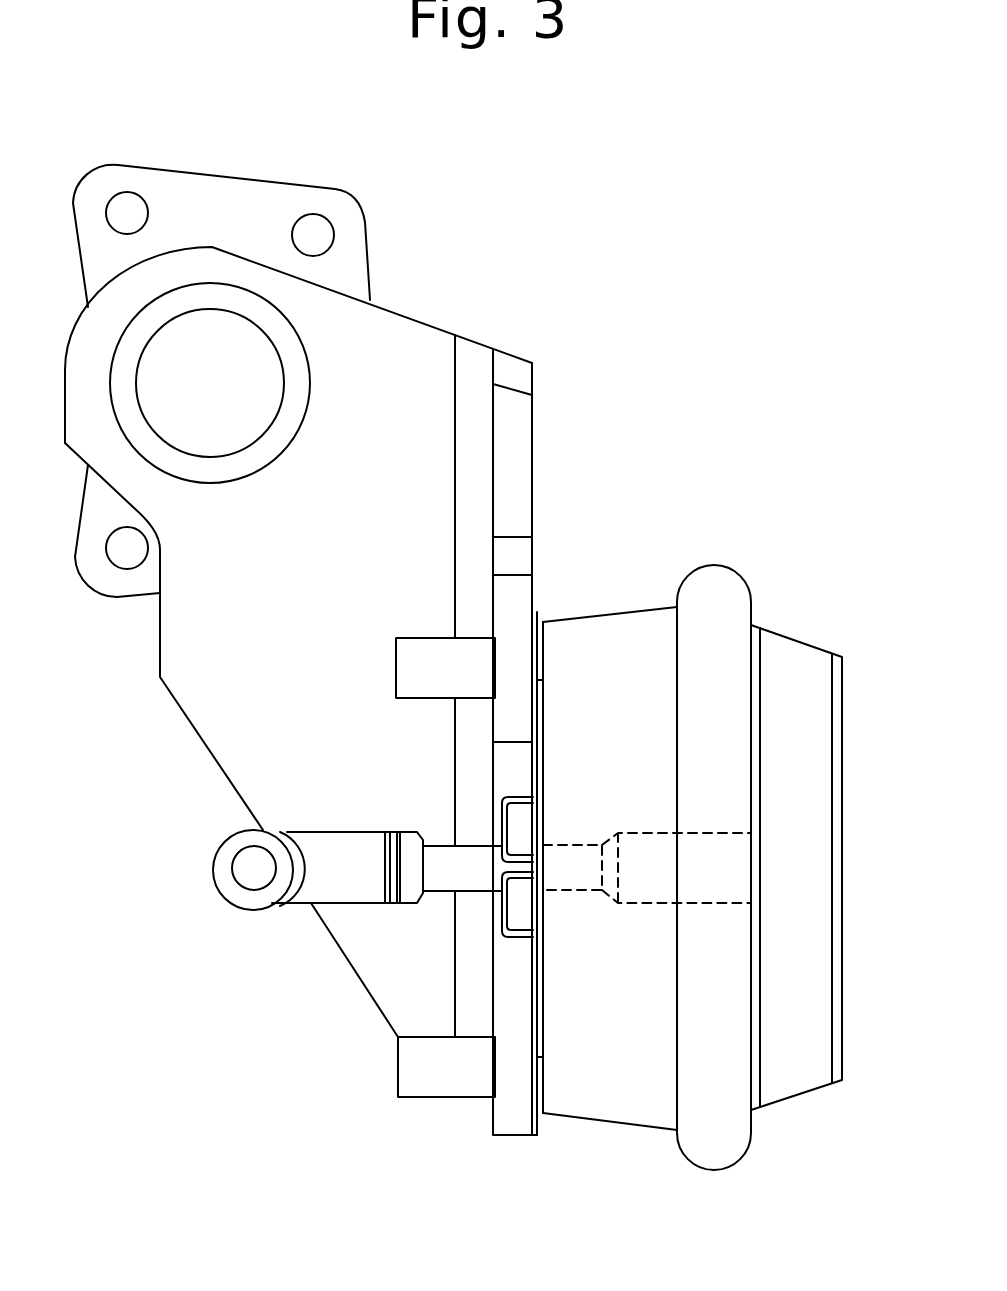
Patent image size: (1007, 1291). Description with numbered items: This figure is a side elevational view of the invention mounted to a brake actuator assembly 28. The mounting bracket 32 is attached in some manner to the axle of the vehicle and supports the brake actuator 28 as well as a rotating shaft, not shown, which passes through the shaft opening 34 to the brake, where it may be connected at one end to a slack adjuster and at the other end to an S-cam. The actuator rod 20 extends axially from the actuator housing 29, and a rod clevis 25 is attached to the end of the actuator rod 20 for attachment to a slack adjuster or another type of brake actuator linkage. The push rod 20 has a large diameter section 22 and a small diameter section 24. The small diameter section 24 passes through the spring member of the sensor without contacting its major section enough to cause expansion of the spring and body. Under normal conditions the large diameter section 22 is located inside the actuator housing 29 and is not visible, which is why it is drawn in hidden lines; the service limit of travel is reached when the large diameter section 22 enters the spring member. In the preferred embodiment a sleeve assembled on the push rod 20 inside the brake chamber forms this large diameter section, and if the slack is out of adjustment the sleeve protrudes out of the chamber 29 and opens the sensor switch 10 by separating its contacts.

The sensor switch 10 is at (528, 848).
The actuator rod 20 is at (436, 900).
The large diameter section 22 is at (638, 880).
The small diameter section 24 is at (570, 880).
The rod clevis 25 is at (343, 893).
The brake actuator assembly 28 is at (655, 362).
The actuator housing 29 is at (797, 653).
The mounting bracket 32 is at (410, 338).
The shaft opening 34 is at (193, 396).